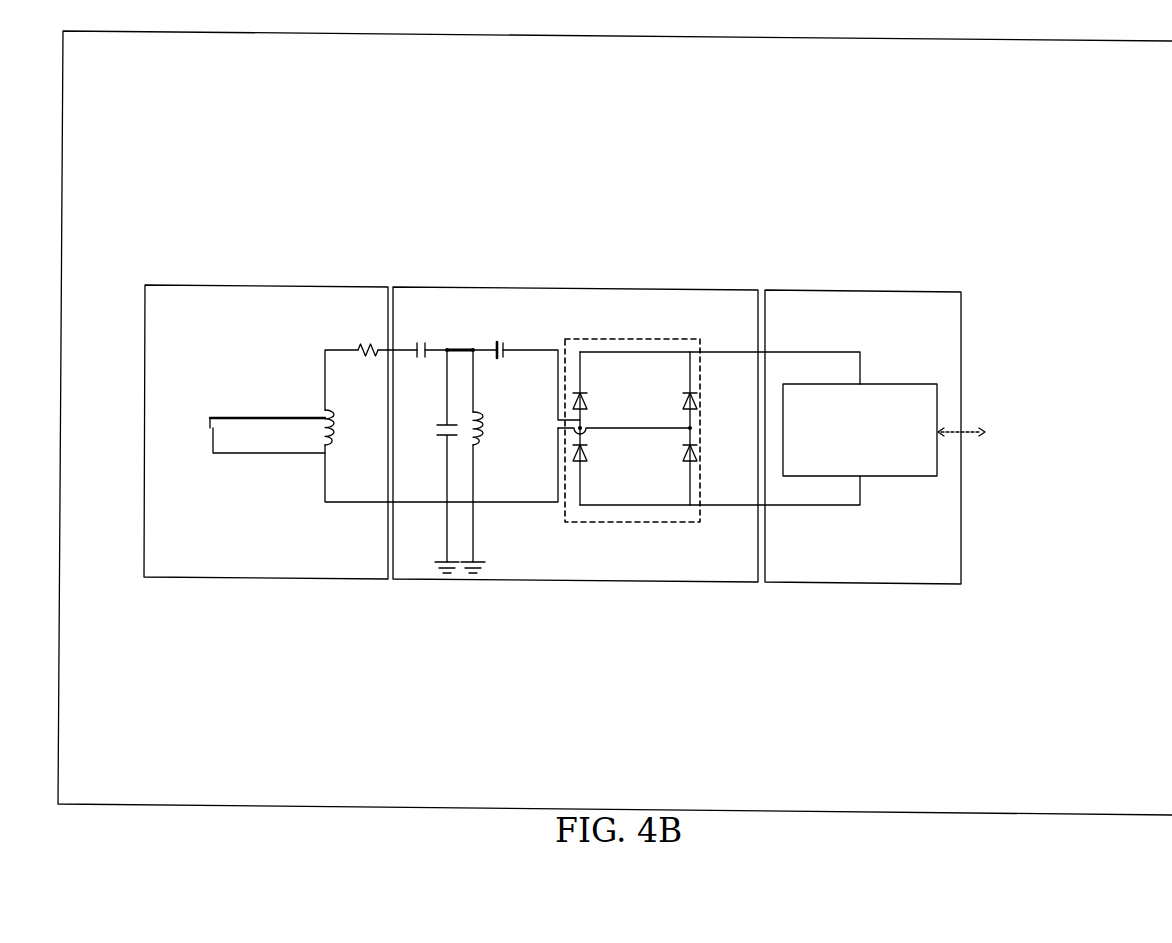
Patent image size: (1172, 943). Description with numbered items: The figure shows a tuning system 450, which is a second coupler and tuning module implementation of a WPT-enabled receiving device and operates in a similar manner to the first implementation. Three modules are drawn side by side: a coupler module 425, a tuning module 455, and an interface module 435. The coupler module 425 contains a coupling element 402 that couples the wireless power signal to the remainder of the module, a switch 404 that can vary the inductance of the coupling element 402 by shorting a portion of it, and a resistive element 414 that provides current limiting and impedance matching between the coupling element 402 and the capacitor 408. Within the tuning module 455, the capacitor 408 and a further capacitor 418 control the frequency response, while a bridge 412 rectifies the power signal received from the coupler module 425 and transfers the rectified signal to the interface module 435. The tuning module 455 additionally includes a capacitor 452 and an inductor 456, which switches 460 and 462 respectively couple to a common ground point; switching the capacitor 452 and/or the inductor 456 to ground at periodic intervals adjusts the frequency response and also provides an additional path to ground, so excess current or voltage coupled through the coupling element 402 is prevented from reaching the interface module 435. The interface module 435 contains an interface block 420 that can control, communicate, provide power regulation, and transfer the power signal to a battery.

The tuning system 450 is at (1026, 101).
The coupler module 425 is at (258, 578).
The tuning module 455 is at (567, 582).
The interface module 435 is at (862, 583).
The coupling element 402 is at (313, 408).
The switch 404 is at (202, 457).
The resistive element 414 is at (359, 344).
The capacitor 408 is at (425, 336).
The capacitor 418 is at (499, 336).
The capacitor 452 is at (428, 428).
The inductor 456 is at (493, 409).
The switch 460 is at (447, 532).
The switch 462 is at (479, 535).
The bridge 412 is at (632, 523).
The interface block 420 is at (922, 478).